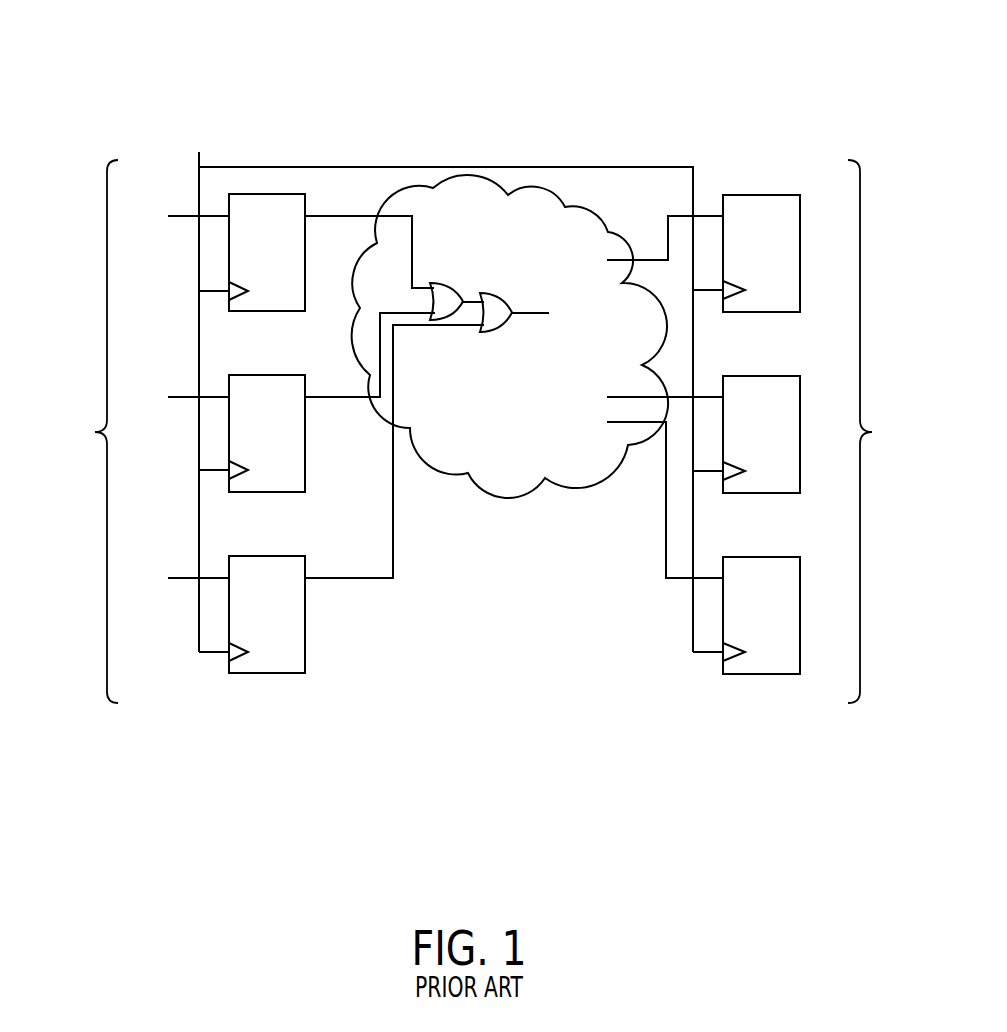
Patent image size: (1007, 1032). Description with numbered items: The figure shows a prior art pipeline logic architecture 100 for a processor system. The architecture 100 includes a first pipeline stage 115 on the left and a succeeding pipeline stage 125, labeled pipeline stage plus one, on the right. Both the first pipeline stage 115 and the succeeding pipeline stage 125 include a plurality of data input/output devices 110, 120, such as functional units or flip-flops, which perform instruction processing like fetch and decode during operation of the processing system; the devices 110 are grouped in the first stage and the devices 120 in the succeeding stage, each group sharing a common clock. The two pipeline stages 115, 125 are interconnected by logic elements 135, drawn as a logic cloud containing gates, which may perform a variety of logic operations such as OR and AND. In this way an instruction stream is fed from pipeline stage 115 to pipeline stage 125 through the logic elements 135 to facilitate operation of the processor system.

The pipeline logic architecture 100 is at (640, 88).
The data input/output devices 110 is at (87, 431).
The first pipeline stage 115 is at (267, 692).
The data input/output devices 120 is at (878, 431).
The succeeding pipeline stage 125 is at (761, 692).
The logic elements 135 is at (507, 497).